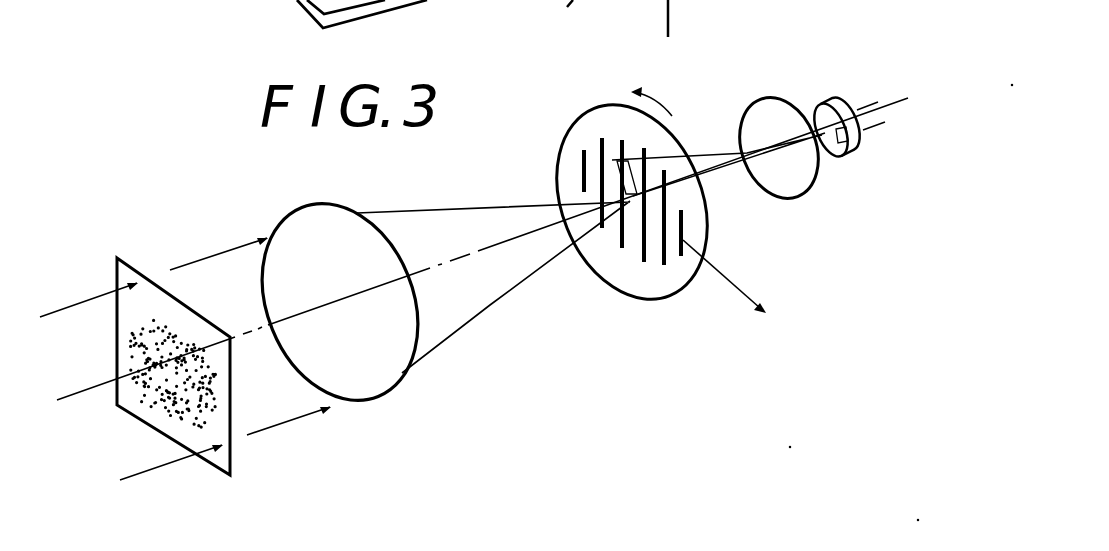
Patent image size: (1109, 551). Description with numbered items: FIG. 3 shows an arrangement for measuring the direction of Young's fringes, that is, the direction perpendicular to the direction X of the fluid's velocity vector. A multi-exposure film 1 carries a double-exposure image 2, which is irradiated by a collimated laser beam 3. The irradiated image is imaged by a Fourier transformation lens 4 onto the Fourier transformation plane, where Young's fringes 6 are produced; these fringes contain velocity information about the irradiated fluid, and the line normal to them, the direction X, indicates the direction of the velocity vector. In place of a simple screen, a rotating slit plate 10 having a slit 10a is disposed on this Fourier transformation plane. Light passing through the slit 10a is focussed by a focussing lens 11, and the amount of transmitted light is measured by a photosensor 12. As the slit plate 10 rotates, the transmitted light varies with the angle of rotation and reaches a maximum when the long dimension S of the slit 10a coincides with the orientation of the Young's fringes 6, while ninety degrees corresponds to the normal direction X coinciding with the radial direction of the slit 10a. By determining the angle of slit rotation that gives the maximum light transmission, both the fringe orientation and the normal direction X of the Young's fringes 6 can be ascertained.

The multi-exposure film 1 is at (220, 477).
The double-exposure image 2 is at (153, 307).
The collimated laser beam 3 is at (147, 473).
The Fourier transformation lens 4 is at (375, 398).
The Young's fringes 6 is at (644, 262).
The rotating slit plate 10 is at (562, 146).
The slit 10a is at (617, 169).
The focussing lens 11 is at (770, 197).
The photosensor 12 is at (823, 102).
The long dimension of the slit S is at (630, 197).
The normal direction of the Young's fringes X is at (724, 290).